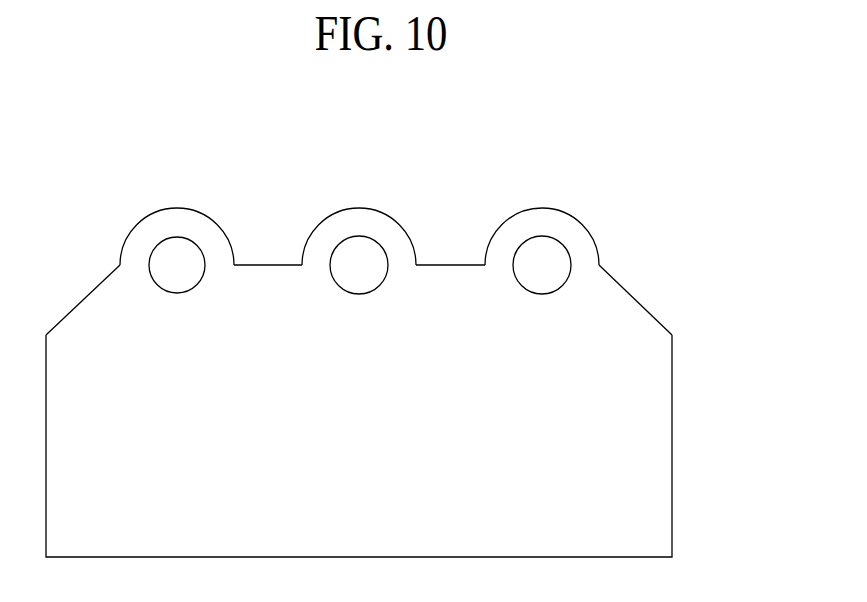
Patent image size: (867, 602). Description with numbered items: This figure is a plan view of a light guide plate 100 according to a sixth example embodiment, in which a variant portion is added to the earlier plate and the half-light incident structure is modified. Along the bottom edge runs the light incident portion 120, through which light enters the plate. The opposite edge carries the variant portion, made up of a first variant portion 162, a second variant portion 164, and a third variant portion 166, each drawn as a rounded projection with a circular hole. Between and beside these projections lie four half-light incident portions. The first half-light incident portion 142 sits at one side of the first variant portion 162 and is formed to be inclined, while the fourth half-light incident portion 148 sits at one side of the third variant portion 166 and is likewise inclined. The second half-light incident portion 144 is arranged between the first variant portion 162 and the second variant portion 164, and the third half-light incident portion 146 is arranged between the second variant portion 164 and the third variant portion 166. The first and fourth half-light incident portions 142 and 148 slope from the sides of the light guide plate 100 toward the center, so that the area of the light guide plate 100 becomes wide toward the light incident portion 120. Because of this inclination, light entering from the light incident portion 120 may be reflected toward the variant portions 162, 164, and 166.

The light guide plate 100 is at (74, 133).
The light incident portion 120 is at (637, 557).
The first half-light incident portion 142 is at (83, 295).
The second half-light incident portion 144 is at (268, 265).
The third half-light incident portion 146 is at (450, 265).
The fourth half-light incident portion 148 is at (636, 298).
The first variant portion 162 is at (175, 207).
The second variant portion 164 is at (360, 207).
The third variant portion 166 is at (545, 207).